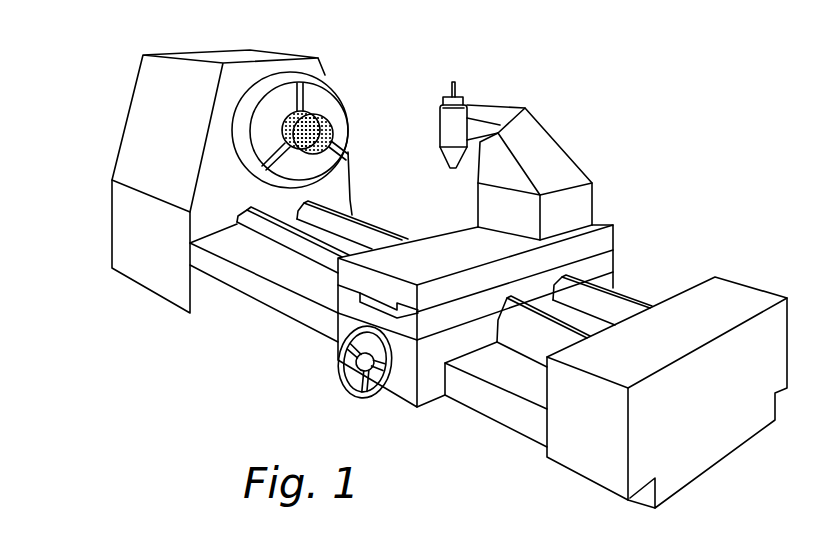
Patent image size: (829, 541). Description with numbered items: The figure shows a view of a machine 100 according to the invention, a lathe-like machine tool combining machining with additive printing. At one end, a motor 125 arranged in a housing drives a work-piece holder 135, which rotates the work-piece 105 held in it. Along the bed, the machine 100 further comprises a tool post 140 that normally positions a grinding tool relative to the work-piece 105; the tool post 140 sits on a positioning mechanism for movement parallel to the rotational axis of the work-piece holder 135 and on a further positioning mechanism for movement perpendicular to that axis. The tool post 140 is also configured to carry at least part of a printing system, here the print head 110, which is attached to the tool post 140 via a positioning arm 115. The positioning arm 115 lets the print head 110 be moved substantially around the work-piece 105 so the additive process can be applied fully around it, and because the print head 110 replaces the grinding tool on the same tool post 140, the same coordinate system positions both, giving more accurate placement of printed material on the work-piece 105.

The machine 100 is at (690, 92).
The work-piece 105 is at (333, 128).
The print head 110 is at (458, 125).
The positioning arm 115 is at (533, 135).
The motor 125 is at (123, 107).
The work-piece holder 135 is at (327, 95).
The tool post 140 is at (607, 180).